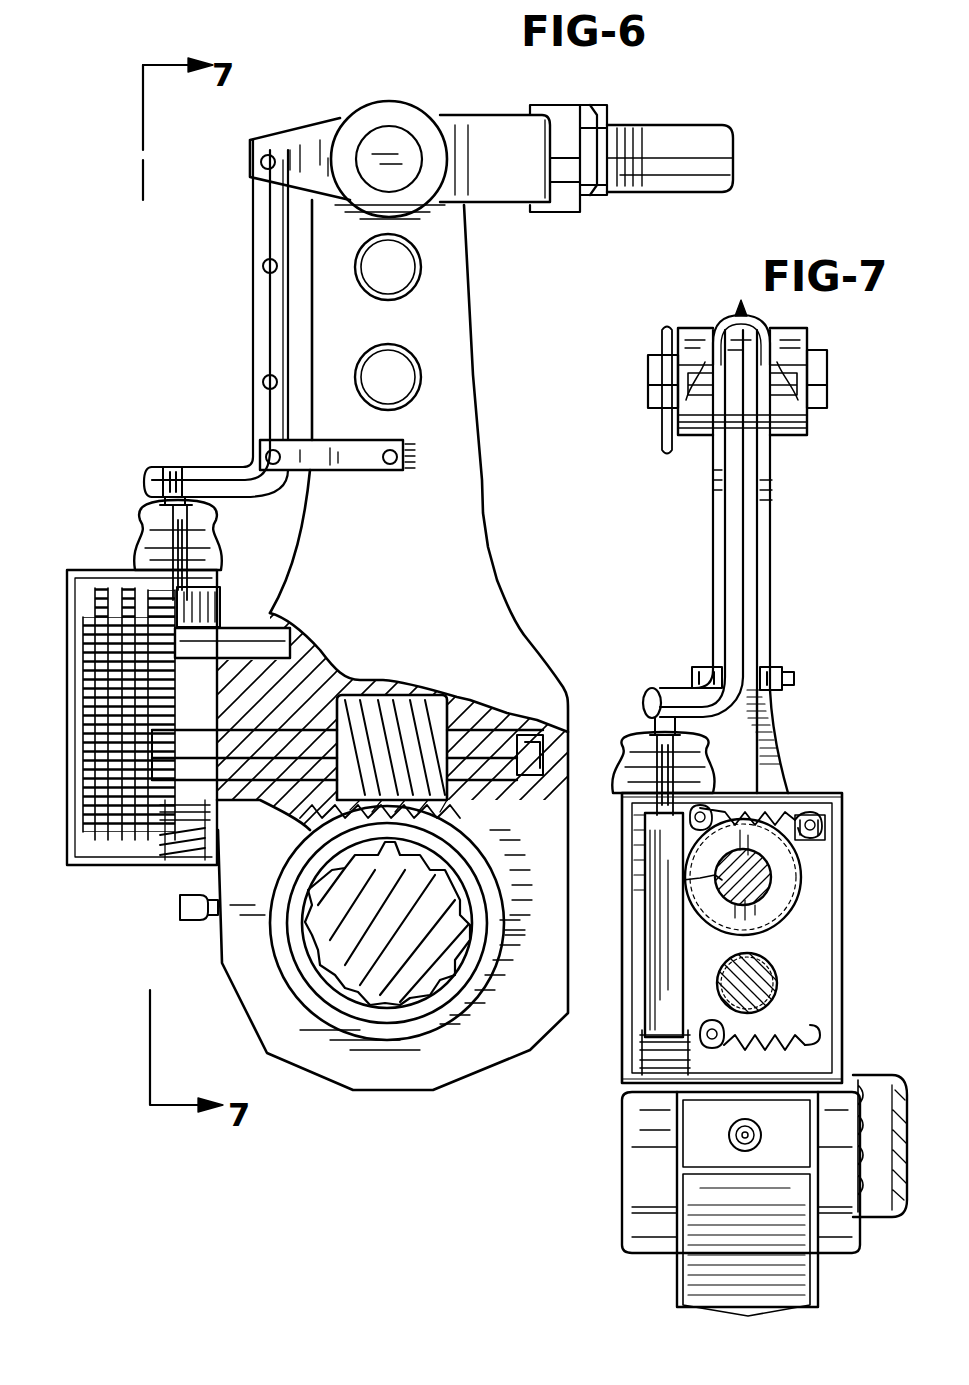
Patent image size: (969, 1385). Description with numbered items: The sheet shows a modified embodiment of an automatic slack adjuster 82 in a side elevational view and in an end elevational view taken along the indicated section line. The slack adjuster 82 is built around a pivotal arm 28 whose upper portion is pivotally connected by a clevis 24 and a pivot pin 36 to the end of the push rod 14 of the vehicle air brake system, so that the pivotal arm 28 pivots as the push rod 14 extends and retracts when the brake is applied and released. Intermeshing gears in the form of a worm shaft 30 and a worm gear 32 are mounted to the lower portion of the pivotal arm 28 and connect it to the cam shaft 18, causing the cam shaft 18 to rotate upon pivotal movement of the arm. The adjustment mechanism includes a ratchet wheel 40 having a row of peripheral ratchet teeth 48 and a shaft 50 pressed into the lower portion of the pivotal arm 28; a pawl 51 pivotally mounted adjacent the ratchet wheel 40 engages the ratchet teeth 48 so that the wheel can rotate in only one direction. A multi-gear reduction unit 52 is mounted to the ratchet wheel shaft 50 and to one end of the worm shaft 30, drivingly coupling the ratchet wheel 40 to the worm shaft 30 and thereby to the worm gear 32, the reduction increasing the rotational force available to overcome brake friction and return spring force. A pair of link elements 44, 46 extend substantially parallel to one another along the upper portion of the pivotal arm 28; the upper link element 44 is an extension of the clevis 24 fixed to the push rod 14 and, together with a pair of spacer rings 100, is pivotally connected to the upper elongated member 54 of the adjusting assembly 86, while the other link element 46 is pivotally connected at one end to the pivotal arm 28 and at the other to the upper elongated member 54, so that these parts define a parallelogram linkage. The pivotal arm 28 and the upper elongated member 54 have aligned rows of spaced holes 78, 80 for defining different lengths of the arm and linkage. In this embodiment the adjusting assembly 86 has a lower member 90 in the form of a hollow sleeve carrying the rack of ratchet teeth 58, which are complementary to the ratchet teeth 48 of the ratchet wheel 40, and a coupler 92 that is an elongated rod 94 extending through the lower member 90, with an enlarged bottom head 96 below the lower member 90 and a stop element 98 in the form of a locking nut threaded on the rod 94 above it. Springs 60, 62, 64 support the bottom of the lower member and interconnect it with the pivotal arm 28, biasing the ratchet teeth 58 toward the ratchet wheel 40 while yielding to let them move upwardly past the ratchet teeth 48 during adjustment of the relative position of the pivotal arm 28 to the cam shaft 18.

In FIG. 6, the push rod 14 is at (660, 128).
In FIG. 6, the cam shaft 18 is at (312, 925).
In FIG. 7, the cam shaft 18 is at (873, 1078).
In FIG. 6, the clevis 24 is at (515, 120).
In FIG. 6, the pivotal arm 28 is at (480, 452).
In FIG. 7, the pivotal arm 28 is at (780, 748).
In FIG. 6, the worm shaft 30 is at (422, 695).
In FIG. 6, the worm gear 32 is at (490, 850).
In FIG. 6, the pivot pin 36 is at (400, 135).
In FIG. 6, the ratchet wheel 40 is at (221, 598).
In FIG. 7, the ratchet wheel 40 is at (790, 910).
In FIG. 6, the upper link element 44 is at (300, 140).
In FIG. 7, the upper link element 44 is at (708, 368).
In FIG. 6, the link element 46 is at (373, 462).
In FIG. 7, the link element 46 is at (780, 667).
In FIG. 6, the ratchet teeth 48 is at (200, 645).
In FIG. 7, the ratchet teeth 48 is at (778, 890).
In FIG. 6, the shaft 50 is at (288, 632).
In FIG. 7, the shaft 50 is at (715, 870).
In FIG. 7, the pawl 51 is at (833, 842).
In FIG. 6, the multi-gear reduction unit 52 is at (80, 720).
In FIG. 6, the upper elongated member 54 is at (251, 232).
In FIG. 7, the upper elongated member 54 is at (745, 482).
In FIG. 7, the ratchet teeth 58 is at (690, 893).
In FIG. 7, the spring 60 is at (787, 812).
In FIG. 6, the spring 62 is at (172, 868).
In FIG. 7, the spring 62 is at (660, 1080).
In FIG. 7, the spring 64 is at (760, 1040).
In FIG. 6, the spaced holes 78 is at (400, 360).
In FIG. 6, the spaced holes 80 is at (263, 378).
In FIG. 6, the slack adjuster 82 is at (300, 78).
In FIG. 7, the slack adjuster 82 is at (645, 338).
In FIG. 7, the adjusting assembly 86 is at (668, 657).
In FIG. 6, the lower member 90 is at (208, 735).
In FIG. 7, the lower member 90 is at (655, 934).
In FIG. 6, the coupler 92 is at (215, 560).
In FIG. 7, the coupler 92 is at (632, 768).
In FIG. 6, the elongated rod 94 is at (140, 555).
In FIG. 7, the elongated rod 94 is at (703, 785).
In FIG. 6, the enlarged bottom head 96 is at (210, 840).
In FIG. 7, the enlarged bottom head 96 is at (628, 1048).
In FIG. 6, the stop element 98 is at (150, 515).
In FIG. 7, the stop element 98 is at (650, 728).
In FIG. 7, the spacer rings 100 is at (741, 300).